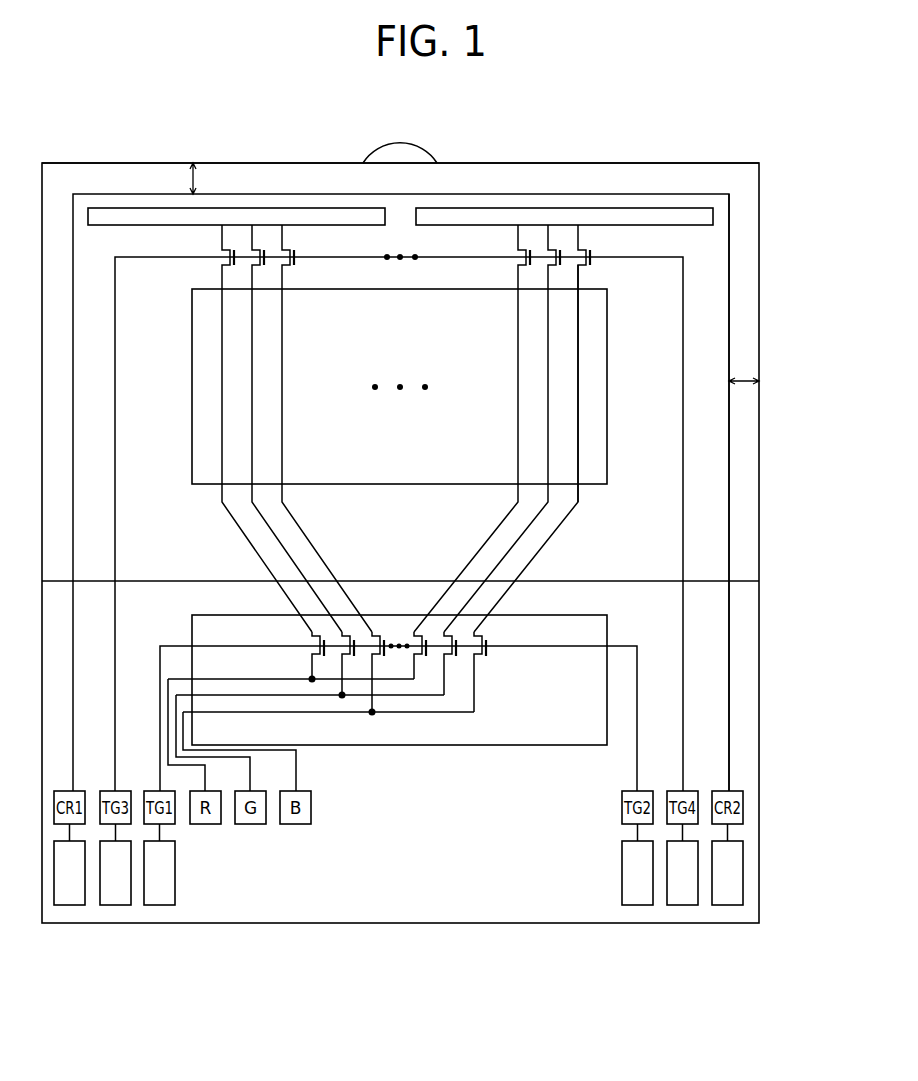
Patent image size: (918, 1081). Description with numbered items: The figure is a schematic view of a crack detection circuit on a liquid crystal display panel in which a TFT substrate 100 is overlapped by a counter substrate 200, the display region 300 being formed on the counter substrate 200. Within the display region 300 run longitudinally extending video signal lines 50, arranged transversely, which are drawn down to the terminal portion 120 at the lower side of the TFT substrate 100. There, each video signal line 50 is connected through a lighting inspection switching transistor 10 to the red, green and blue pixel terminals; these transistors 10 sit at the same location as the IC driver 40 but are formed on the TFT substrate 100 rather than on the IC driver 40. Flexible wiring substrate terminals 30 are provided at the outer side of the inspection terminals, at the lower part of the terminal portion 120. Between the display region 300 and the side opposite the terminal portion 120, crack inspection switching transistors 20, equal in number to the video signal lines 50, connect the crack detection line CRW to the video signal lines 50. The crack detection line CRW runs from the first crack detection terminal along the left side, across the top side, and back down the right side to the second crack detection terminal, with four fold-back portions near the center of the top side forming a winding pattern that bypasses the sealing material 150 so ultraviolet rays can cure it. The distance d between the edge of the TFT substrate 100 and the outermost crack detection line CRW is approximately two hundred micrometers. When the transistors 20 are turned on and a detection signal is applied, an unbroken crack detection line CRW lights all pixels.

The lighting inspection switching transistor 10 is at (485, 655).
The crack inspection switching transistor 20 is at (517, 262).
The flexible wiring substrate terminals 30 is at (175, 868).
The IC driver 40 is at (560, 745).
The video signal lines 50 is at (578, 345).
The TFT substrate 100 is at (759, 650).
The terminal portion 120 is at (743, 710).
The sealing material 150 is at (425, 143).
The counter substrate 200 is at (735, 163).
The display region 300 is at (607, 290).
The crack detection line CRW is at (648, 193).
The distance d is at (465, 273).